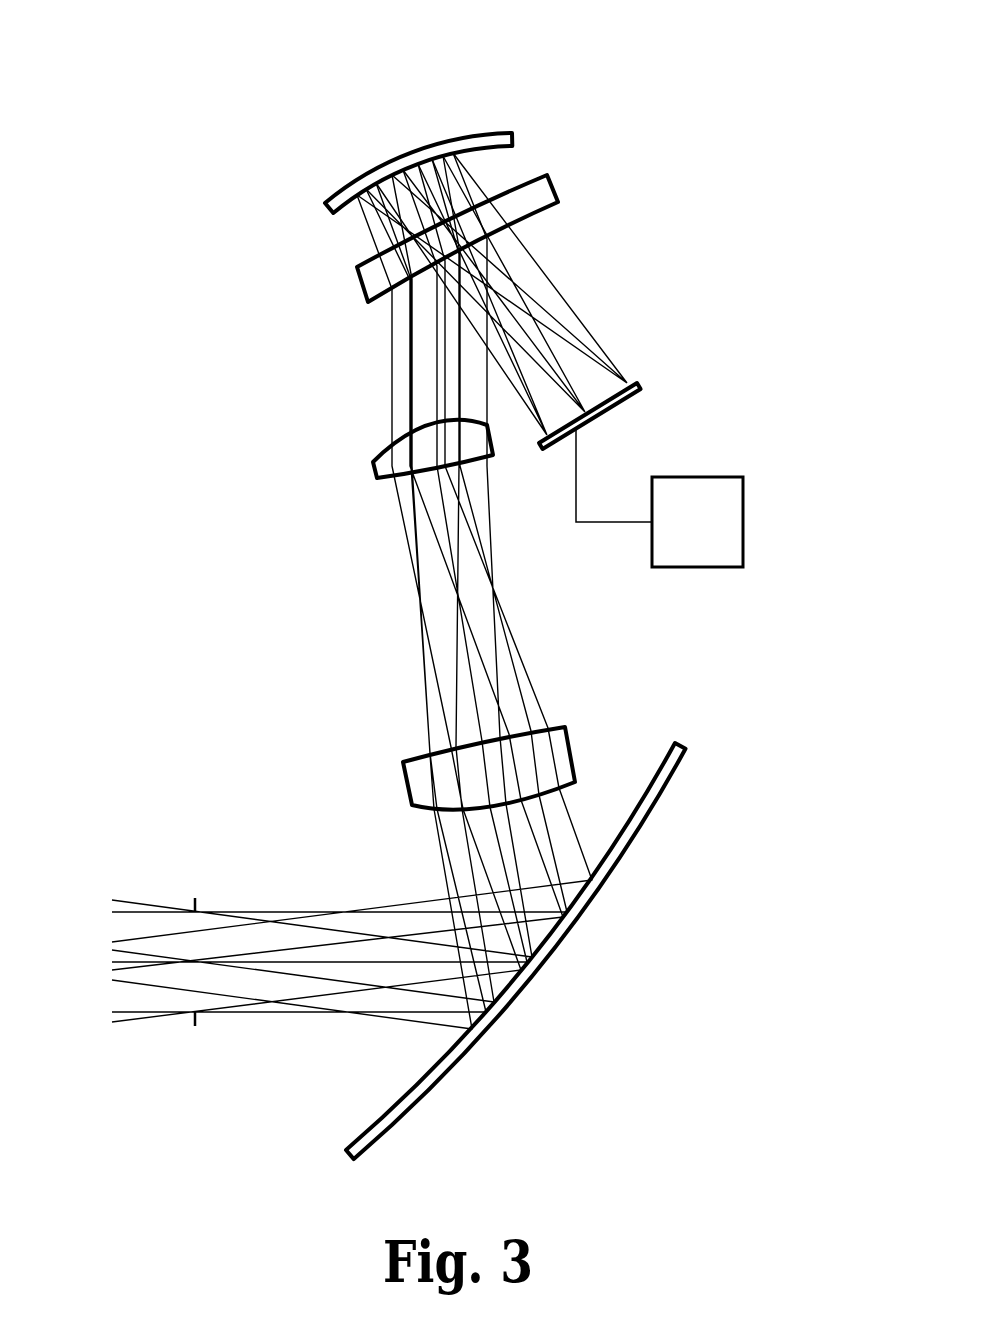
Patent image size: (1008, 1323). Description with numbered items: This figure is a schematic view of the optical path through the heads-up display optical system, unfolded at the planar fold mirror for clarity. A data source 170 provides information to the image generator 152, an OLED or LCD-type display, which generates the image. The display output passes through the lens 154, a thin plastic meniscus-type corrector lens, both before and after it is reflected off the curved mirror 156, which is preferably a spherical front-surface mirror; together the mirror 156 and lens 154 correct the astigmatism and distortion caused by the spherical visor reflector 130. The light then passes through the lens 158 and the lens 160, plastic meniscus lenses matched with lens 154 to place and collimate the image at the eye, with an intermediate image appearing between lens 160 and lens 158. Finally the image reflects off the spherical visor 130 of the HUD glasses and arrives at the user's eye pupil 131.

The curved mirror 156 is at (473, 141).
The lens 154 is at (358, 285).
The lens 158 is at (373, 470).
The lens 160 is at (403, 779).
The image generator 152 is at (634, 396).
The data source 170 is at (714, 537).
The visor 130 is at (670, 770).
The eye pupil 131 is at (187, 882).